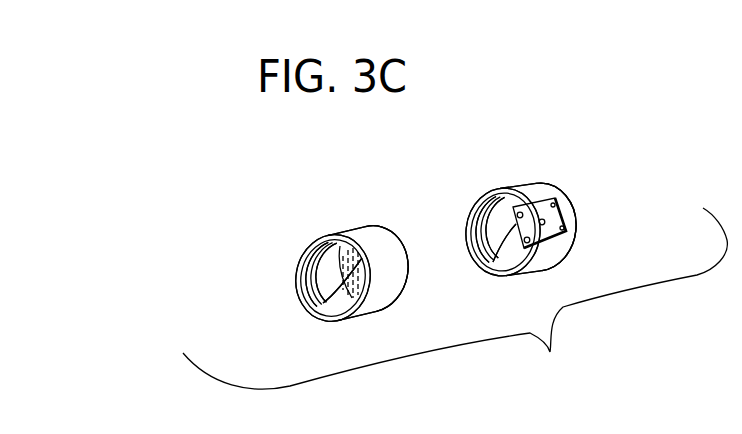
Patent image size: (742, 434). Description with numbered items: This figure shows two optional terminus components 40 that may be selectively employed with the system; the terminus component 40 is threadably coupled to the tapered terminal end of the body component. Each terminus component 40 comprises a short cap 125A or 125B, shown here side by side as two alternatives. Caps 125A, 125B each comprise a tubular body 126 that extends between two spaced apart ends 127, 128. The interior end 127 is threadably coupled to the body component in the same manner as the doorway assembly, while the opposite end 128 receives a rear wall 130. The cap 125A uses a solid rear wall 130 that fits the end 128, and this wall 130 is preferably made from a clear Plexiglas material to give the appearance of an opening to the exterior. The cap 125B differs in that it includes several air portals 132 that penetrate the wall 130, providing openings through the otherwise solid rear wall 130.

The terminus component 40 is at (336, 191).
The cap 125A is at (397, 332).
The cap 125B is at (575, 173).
The tubular body 126 is at (362, 240).
The interior end 127 is at (294, 258).
The end 128 is at (401, 255).
The rear wall 130 is at (323, 303).
The air portals 132 is at (536, 236).